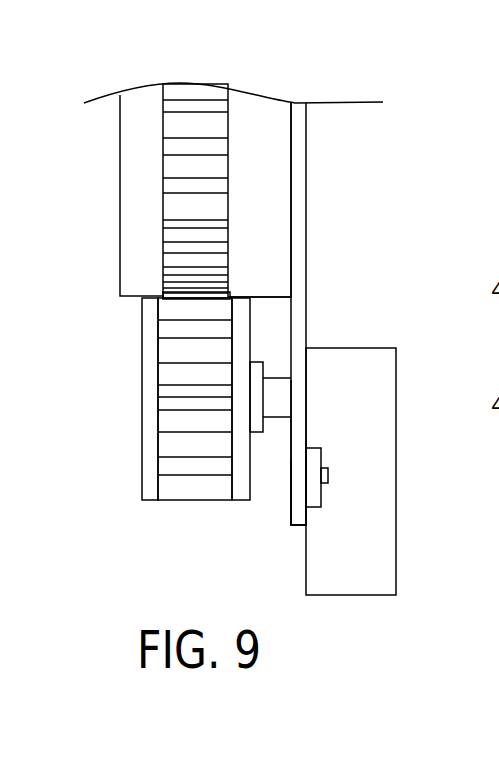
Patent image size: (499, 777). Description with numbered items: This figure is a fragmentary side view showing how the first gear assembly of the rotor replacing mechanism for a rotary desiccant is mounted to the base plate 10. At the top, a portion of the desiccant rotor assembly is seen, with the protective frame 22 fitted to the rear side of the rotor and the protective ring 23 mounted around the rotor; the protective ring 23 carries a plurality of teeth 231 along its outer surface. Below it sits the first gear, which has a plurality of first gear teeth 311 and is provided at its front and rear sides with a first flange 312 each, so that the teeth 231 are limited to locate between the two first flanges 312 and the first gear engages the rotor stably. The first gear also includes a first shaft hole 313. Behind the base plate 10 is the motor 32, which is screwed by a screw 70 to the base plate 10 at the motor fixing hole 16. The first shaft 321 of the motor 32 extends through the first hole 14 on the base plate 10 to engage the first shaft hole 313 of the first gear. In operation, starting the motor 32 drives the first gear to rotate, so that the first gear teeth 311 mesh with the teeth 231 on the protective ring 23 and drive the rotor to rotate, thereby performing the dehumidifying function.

The base plate 10 is at (295, 175).
The first hole 14 is at (297, 407).
The motor fixing hole 16 is at (297, 475).
The protective frame 22 is at (270, 236).
The protective ring 23 is at (142, 228).
The teeth 231 is at (193, 186).
The first gear teeth 311 is at (178, 393).
The first flange 312 is at (152, 335).
The first shaft hole 313 is at (258, 417).
The first shaft 321 is at (282, 390).
The motor 32 is at (350, 411).
The screw 70 is at (328, 479).